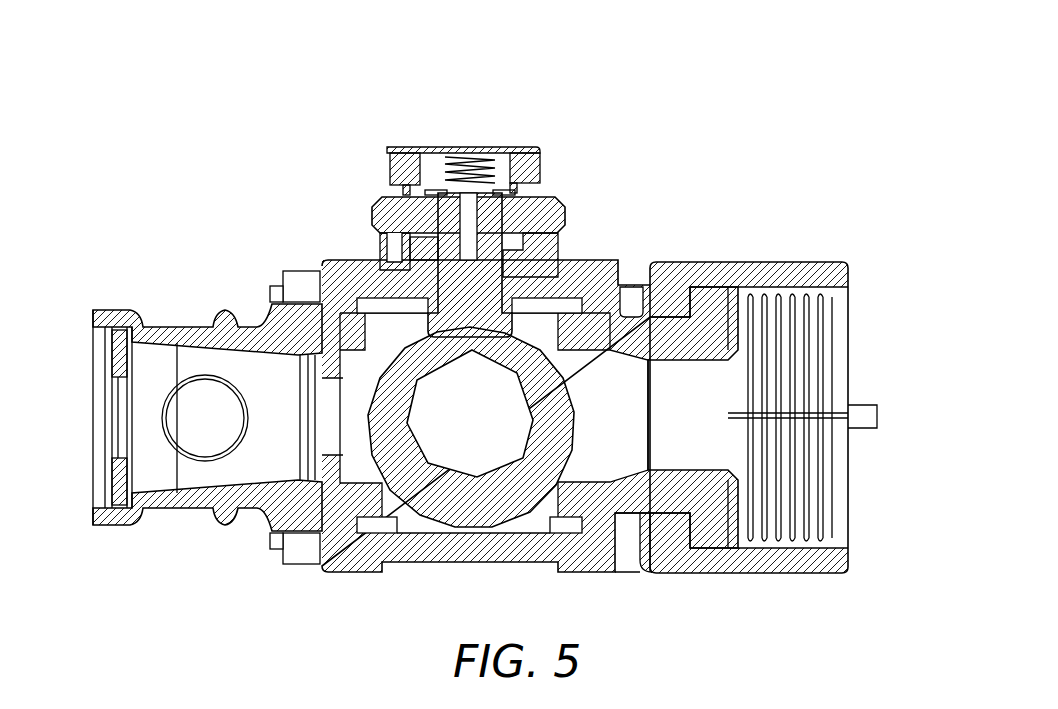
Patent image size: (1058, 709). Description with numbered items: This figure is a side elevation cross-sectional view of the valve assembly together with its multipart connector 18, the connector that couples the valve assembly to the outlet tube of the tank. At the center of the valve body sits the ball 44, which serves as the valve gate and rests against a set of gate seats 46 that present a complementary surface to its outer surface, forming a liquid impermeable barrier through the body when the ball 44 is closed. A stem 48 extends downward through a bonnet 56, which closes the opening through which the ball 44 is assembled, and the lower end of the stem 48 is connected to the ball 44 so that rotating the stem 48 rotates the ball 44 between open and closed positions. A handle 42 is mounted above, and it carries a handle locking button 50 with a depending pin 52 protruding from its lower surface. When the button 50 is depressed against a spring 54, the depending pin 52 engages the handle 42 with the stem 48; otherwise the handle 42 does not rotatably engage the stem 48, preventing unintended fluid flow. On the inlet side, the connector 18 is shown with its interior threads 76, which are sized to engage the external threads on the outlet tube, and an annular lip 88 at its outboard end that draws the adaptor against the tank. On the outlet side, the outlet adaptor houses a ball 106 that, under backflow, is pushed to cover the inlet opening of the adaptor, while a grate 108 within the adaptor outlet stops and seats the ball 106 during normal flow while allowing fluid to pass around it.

The multipart connector 18 is at (876, 263).
The handle 42 is at (560, 217).
The ball 44 is at (457, 508).
The gate seats 46 is at (580, 317).
The stem 48 is at (495, 282).
The handle locking button 50 is at (523, 145).
The depending pin 52 is at (398, 192).
The spring 54 is at (513, 170).
The bonnet 56 is at (413, 277).
The interior threads 76 is at (827, 527).
The annular lip 88 is at (647, 525).
The ball 106 is at (210, 447).
The grate 108 is at (122, 337).